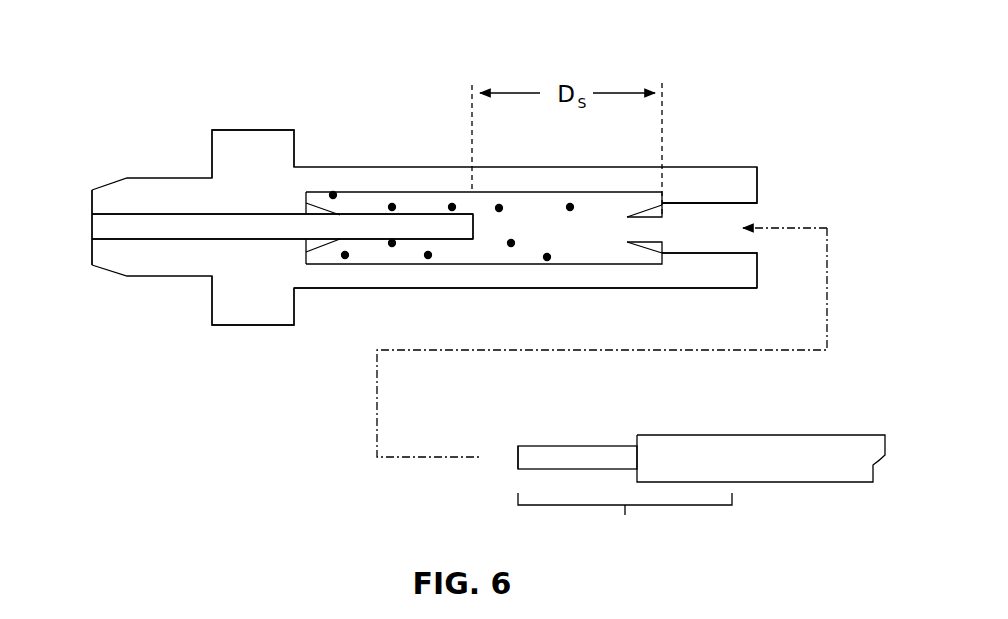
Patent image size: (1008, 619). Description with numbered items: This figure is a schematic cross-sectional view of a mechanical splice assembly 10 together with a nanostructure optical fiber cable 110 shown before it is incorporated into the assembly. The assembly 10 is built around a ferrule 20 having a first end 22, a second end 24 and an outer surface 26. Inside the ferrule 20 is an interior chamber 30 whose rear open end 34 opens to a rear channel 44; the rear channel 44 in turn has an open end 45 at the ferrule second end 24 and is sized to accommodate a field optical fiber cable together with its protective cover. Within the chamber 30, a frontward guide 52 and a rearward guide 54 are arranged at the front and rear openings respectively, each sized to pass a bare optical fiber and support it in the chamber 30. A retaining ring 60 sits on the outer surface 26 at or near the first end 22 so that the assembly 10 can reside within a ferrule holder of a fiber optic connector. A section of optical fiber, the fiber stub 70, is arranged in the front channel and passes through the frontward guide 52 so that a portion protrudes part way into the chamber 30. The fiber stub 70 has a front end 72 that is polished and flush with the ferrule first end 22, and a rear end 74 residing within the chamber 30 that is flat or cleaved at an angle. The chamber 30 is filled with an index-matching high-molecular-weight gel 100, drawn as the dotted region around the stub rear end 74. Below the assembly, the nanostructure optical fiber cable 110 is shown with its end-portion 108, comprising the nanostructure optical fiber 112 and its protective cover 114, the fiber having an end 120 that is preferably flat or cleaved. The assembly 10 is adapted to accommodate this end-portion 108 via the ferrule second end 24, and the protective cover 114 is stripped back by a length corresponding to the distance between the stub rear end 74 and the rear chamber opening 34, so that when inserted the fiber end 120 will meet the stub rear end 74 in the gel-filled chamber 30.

The mechanical splice assembly 10 is at (211, 46).
The ferrule 20 is at (176, 170).
The first end 22 is at (92, 203).
The second end 24 is at (757, 188).
The outer surface 26 is at (425, 288).
The interior chamber 30 is at (587, 183).
The rear open end 34 is at (644, 229).
The rear channel 44 is at (676, 217).
The open end 45 is at (753, 215).
The frontward guide 52 is at (323, 207).
The rearward guide 54 is at (643, 205).
The retaining ring 60 is at (252, 130).
The optical fiber stub 70 is at (137, 227).
The front end 72 is at (92, 229).
The rear end 74 is at (474, 231).
The index-matching high-molecular-weight gel 100 is at (569, 242).
The end-portion 108 is at (625, 518).
The nanostructure optical fiber cable 110 is at (668, 477).
The nanostructure optical fiber 112 is at (590, 445).
The protective cover 114 is at (792, 452).
The end 120 is at (518, 457).